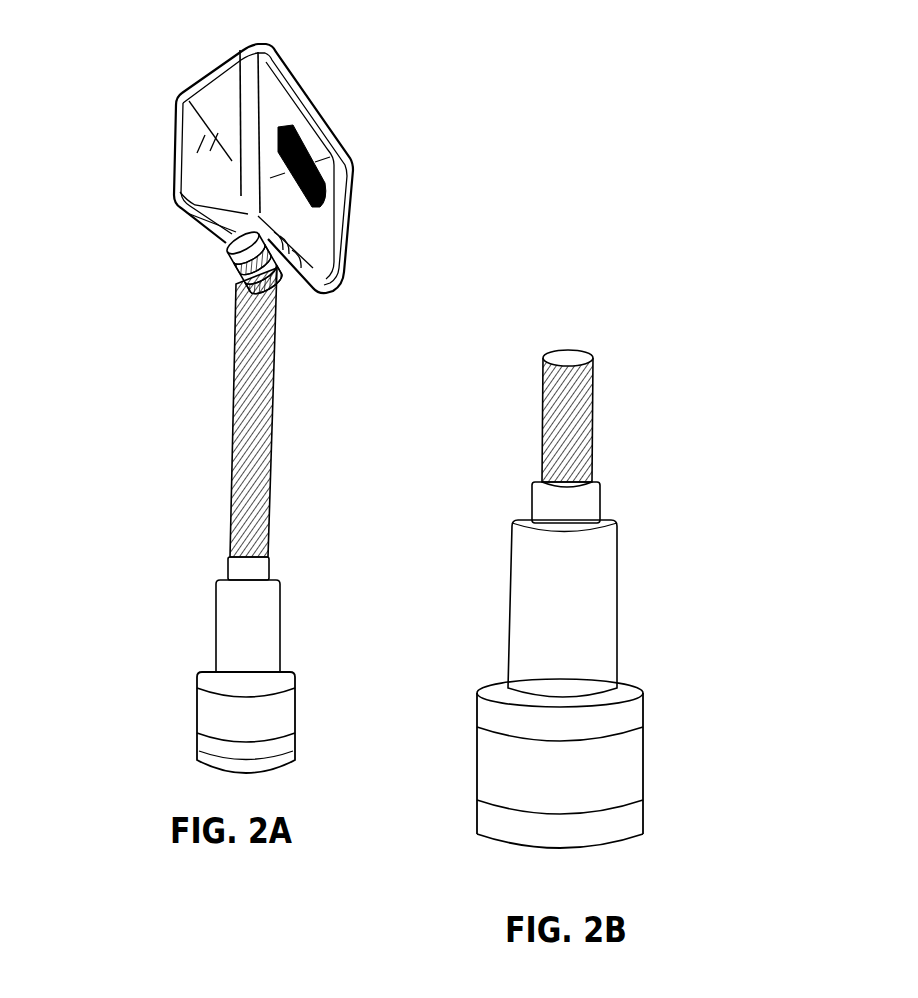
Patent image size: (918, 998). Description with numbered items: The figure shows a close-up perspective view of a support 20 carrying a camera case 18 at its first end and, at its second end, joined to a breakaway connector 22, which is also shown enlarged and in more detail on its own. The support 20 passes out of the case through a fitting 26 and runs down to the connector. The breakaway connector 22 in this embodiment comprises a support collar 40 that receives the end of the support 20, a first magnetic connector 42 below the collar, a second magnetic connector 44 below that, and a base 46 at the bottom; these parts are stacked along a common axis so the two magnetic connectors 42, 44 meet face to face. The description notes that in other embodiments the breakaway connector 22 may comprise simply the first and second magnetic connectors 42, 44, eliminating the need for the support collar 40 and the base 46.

In FIG. 2A, the handheld device / housing 18 is at (323, 145).
In FIG. 2A, the support 20 is at (230, 385).
In FIG. 2B, the support 20 is at (553, 402).
In FIG. 2A, the breakaway connector 22 is at (209, 633).
In FIG. 2B, the breakaway connector 22 is at (578, 656).
In FIG. 2A, the strain relief / ferrule 26 is at (227, 257).
In FIG. 2B, the support collar 40 is at (582, 505).
In FIG. 2B, the first magnetic connector 42 is at (583, 618).
In FIG. 2B, the second magnetic connector 44 is at (617, 773).
In FIG. 2B, the base 46 is at (630, 823).